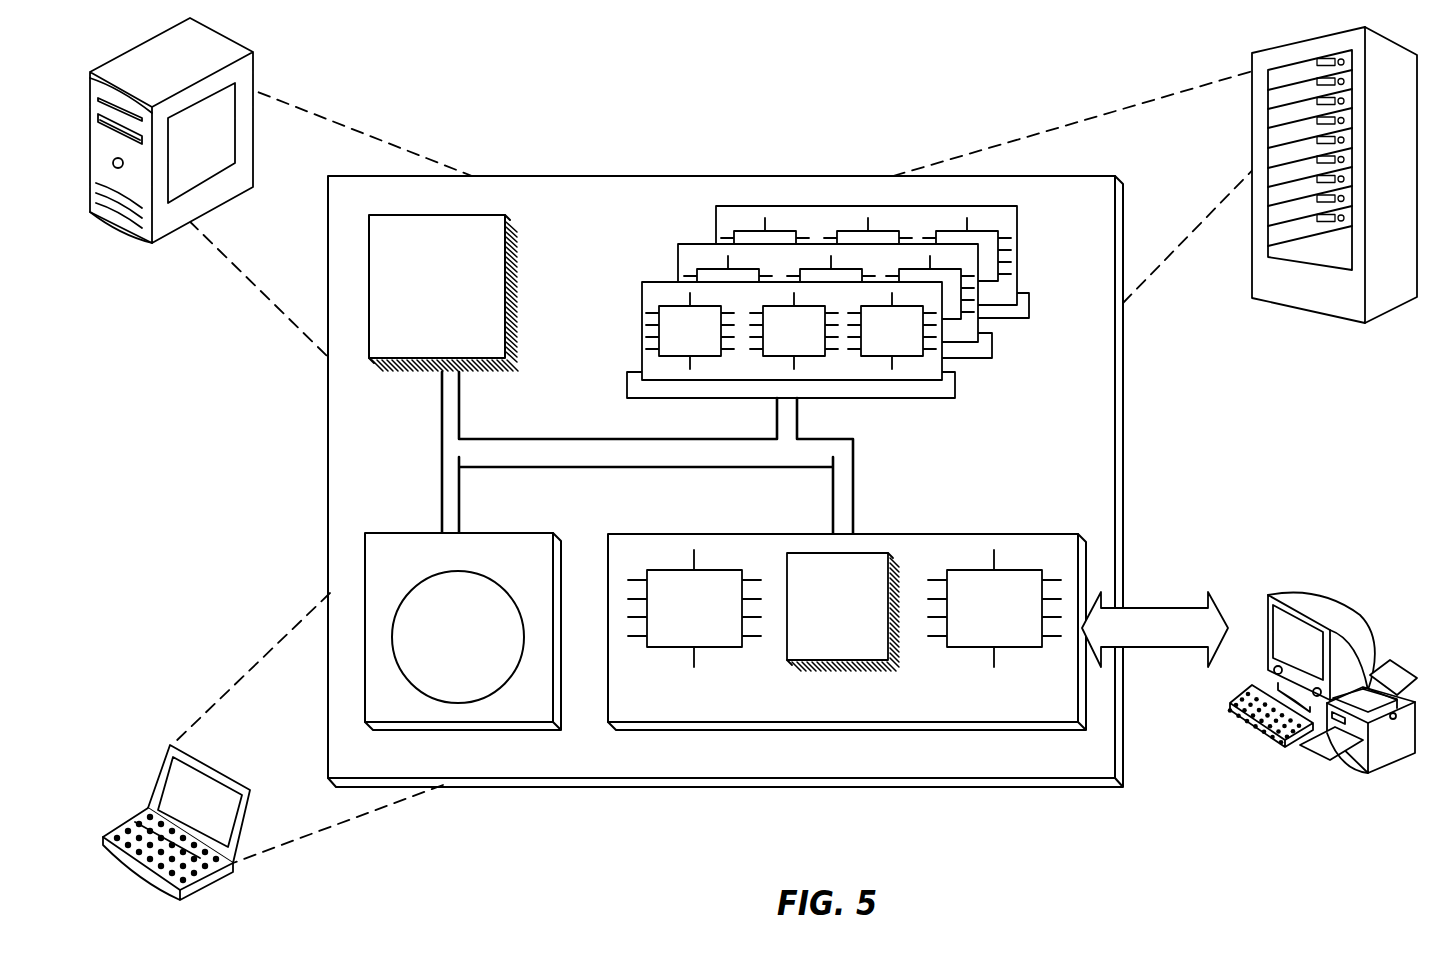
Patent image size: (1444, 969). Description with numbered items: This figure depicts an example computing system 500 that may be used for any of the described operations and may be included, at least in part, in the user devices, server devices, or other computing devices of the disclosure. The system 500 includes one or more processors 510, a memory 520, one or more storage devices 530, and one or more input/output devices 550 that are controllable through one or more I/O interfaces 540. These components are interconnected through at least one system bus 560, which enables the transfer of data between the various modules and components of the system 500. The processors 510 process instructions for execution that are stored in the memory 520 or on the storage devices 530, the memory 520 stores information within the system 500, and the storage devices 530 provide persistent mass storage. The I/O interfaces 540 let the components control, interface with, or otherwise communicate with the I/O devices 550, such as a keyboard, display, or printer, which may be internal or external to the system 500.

The computing system 500 is at (541, 95).
The processor 510 is at (496, 352).
The memory 520 is at (1021, 356).
The storage device 530 is at (543, 712).
The I/O interface 540 is at (961, 709).
The I/O device 550 is at (1263, 599).
The system bus 560 is at (641, 458).